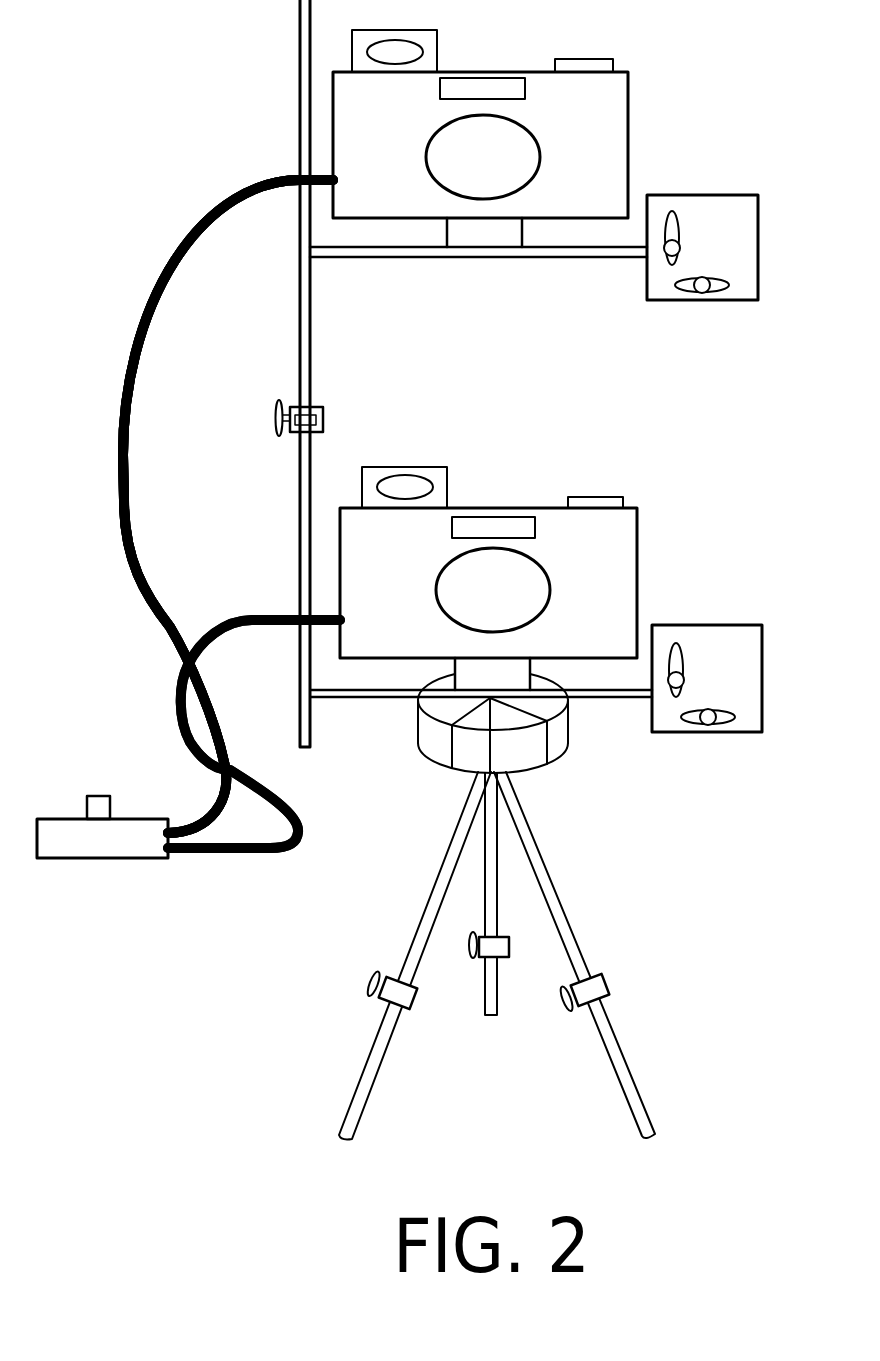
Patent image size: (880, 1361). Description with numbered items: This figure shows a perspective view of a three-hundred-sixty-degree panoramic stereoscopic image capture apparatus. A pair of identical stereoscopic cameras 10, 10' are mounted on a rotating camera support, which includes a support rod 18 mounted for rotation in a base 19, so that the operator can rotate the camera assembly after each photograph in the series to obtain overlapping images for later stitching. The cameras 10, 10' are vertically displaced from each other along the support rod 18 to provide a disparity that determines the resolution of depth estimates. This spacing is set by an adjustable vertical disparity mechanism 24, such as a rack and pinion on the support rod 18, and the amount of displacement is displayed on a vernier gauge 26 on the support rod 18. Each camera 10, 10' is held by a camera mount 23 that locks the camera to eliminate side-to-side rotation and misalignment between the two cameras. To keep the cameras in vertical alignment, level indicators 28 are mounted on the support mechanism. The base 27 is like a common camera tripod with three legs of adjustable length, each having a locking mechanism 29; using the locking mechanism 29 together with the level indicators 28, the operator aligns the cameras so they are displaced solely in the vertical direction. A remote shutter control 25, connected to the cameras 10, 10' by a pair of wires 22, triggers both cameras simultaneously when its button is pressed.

The stereoscopic camera 10 is at (520, 124).
The stereoscopic camera 10' is at (528, 562).
The support rod 18 is at (297, 27).
The base 19 is at (567, 743).
The pair of wires 22 is at (129, 483).
The camera mount 23 is at (478, 237).
The adjustable vertical disparity mechanism 24 is at (323, 410).
The remote shutter control 25 is at (106, 860).
The vernier gauge 26 is at (275, 418).
The base 27 is at (625, 1050).
The level indicator 28 is at (758, 232).
The locking mechanism 29 is at (568, 1007).